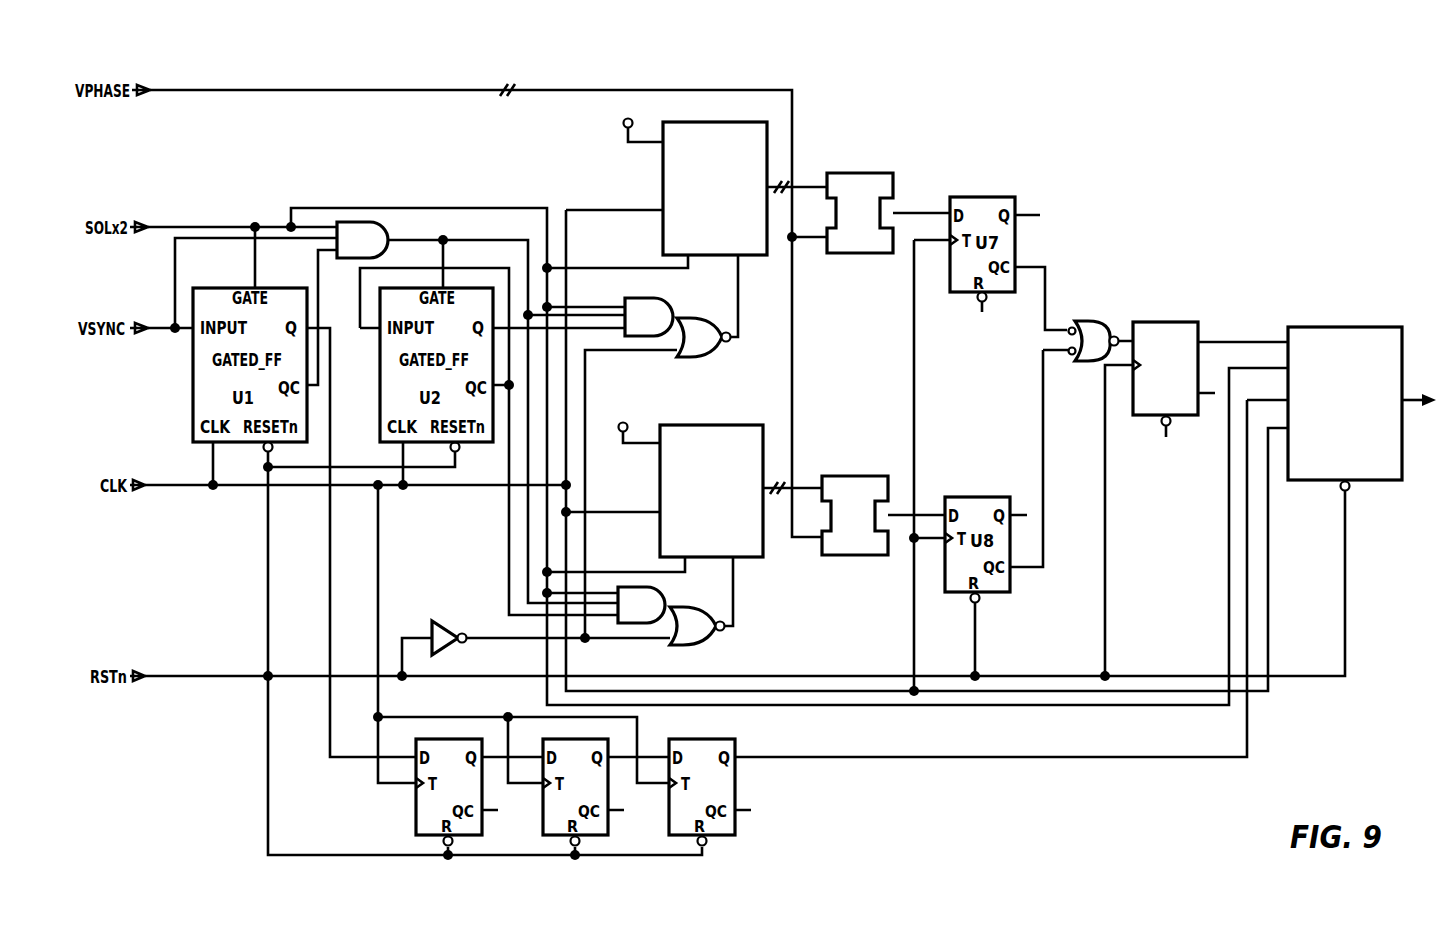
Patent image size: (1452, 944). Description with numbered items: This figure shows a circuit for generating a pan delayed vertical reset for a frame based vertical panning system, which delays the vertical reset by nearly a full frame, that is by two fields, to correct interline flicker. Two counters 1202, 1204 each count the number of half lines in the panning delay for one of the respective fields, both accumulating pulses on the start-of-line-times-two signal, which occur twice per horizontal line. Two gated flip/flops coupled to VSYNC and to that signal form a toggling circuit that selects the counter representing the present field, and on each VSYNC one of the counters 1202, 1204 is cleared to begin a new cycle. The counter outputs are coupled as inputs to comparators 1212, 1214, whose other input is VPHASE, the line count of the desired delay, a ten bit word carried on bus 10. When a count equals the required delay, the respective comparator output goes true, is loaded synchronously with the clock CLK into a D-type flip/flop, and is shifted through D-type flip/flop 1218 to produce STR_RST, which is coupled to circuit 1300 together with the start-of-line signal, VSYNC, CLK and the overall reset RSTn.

The 10-bit bus 10 is at (488, 299).
The counter 1202 is at (663, 170).
The counter 1204 is at (713, 425).
The comparator 1212 is at (852, 255).
The comparator 1214 is at (852, 476).
The D-type flip/flop 1218 is at (1152, 322).
The circuit 1300 is at (1322, 327).